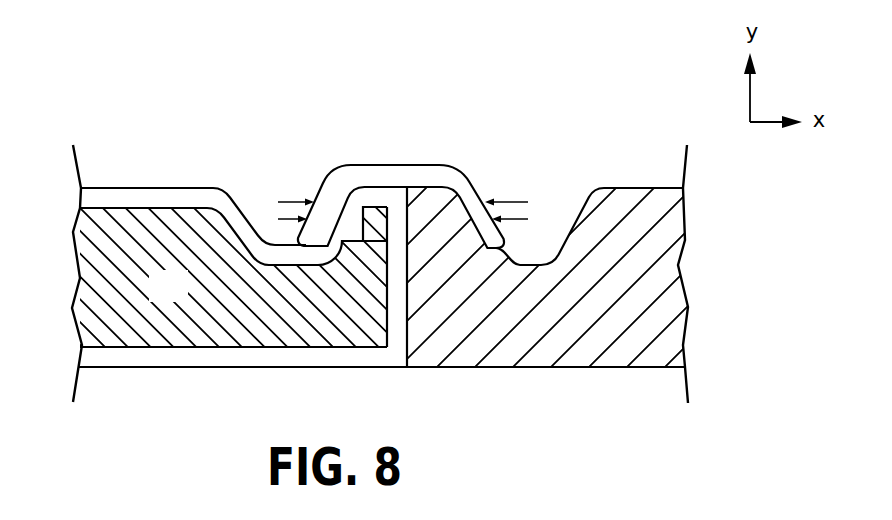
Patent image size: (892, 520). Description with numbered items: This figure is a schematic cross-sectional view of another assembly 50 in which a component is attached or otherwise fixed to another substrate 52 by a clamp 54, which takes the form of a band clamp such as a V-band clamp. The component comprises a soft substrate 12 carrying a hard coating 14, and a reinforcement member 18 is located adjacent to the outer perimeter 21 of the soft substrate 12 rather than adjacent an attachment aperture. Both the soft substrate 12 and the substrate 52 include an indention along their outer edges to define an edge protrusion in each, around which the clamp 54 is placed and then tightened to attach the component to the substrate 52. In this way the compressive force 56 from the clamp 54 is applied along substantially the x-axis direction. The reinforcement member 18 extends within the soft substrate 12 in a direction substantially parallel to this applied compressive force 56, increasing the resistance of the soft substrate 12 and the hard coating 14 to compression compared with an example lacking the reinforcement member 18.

The assembly 50 is at (426, 226).
The soft substrate 12 is at (153, 299).
The hard coating 14 is at (165, 187).
The reinforcement member 18 is at (367, 228).
The outer perimeter 21 is at (388, 294).
The substrate 52 is at (637, 188).
The clamp 54 is at (488, 187).
The compressive force 56 is at (403, 212).